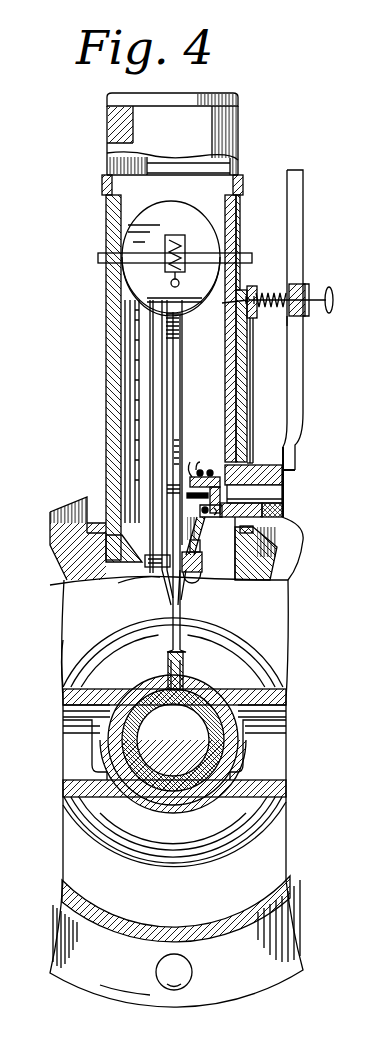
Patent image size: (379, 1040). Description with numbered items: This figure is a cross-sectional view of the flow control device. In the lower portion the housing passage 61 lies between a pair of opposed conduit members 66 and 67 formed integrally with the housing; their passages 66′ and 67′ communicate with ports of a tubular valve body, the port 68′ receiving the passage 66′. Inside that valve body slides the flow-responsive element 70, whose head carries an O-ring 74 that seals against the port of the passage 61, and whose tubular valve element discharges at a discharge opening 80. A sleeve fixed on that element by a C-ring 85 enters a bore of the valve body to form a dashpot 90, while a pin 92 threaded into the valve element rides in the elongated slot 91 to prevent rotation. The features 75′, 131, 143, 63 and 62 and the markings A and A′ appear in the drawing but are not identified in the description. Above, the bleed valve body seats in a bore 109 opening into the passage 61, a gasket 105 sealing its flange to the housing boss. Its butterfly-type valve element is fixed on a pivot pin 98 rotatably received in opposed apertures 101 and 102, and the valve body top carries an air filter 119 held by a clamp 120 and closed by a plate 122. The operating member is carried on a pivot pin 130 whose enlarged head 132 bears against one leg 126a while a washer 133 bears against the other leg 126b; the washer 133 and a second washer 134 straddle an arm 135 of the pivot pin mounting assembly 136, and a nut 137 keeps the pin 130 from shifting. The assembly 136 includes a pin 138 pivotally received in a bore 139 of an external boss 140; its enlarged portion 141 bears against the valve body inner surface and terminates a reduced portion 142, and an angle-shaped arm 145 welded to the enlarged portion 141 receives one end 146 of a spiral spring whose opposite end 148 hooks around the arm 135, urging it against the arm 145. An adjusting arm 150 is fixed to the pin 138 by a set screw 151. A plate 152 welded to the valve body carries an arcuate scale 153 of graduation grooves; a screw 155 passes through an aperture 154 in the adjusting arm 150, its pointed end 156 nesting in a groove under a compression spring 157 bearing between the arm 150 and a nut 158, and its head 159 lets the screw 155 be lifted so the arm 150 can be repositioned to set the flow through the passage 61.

The plate 122 is at (240, 100).
The air filter 119 is at (238, 137).
The clamp 120 is at (102, 185).
The pivot pin 98 is at (196, 257).
The aperture 102 is at (248, 253).
The aperture 101 is at (100, 263).
The compression spring 157 is at (289, 284).
The screw 155 is at (320, 287).
The scale 153 is at (254, 286).
The nut 158 is at (260, 293).
The pointed end 156 is at (230, 305).
The aperture 154 is at (283, 320).
The head 159 is at (308, 316).
The adjusting arm 150 is at (303, 385).
The leg 126b is at (184, 396).
The plate 152 is at (254, 402).
The rod 131 is at (191, 440).
The shaft or pin 138 is at (263, 465).
The external boss 140 is at (292, 447).
The leg 126a is at (162, 435).
The pivot pin mounting assembly 136 is at (190, 466).
The bracket 143 is at (205, 477).
The bore 139 is at (288, 488).
The reduced portion 142 is at (188, 495).
The enlarged portion 141 is at (254, 494).
The opposite end of spiral spring 148 is at (200, 505).
The end of spiral spring 146 is at (284, 510).
The gasket 105 is at (87, 527).
The arm 135 is at (190, 545).
The nut 137 is at (203, 560).
The set screw 151 is at (303, 530).
The angle-shaped arm 145 is at (280, 548).
The enlarged head 132 is at (93, 582).
The bore 109 is at (112, 580).
The pivot pin 130 is at (158, 568).
The washer 133 is at (184, 575).
The washer 134 is at (201, 580).
The pin 63 is at (182, 688).
The conduit member 67 is at (262, 652).
The dashpot 90 is at (63, 680).
The pin 92 is at (166, 686).
The elongated slot 91 is at (196, 690).
The passage 67′ is at (286, 702).
The conduit member 66 is at (63, 695).
The passage 66′ is at (63, 712).
The bore 75′ is at (173, 740).
The discharge opening 80 is at (63, 772).
The C-ring 85 is at (63, 815).
The port 68′ is at (96, 826).
The O-ring 74 is at (220, 856).
The flow-responsive element 70 is at (187, 858).
The passage 61 is at (248, 898).
The base 62 is at (112, 978).
The opening A is at (168, 988).
The section A′ is at (100, 505).